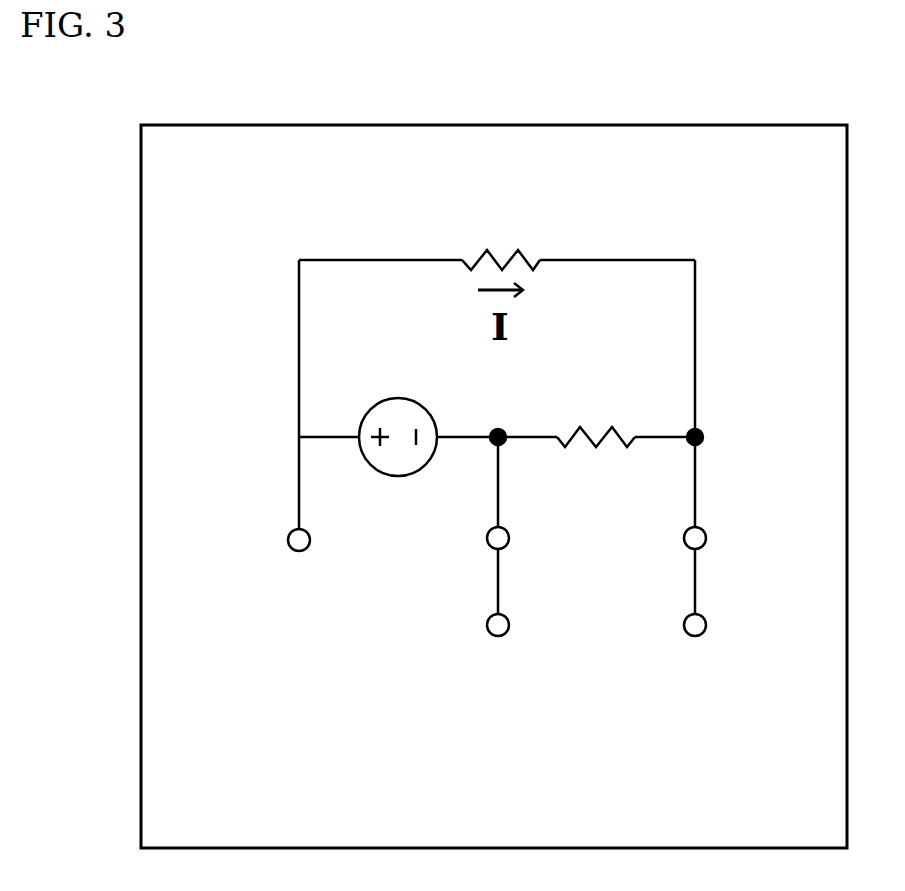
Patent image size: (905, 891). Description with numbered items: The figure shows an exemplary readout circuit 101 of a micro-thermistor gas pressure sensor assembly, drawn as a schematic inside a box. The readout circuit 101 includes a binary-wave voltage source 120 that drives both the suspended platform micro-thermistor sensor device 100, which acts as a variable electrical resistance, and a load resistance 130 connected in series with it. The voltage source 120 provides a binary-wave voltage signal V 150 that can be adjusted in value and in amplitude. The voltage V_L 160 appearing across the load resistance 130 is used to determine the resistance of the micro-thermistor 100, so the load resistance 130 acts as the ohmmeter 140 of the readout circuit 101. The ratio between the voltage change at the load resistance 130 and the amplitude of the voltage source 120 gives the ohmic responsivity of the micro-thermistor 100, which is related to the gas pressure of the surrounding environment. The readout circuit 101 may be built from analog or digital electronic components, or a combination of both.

The readout electrical circuit 101 is at (138, 275).
The suspended platform micro-thermistor sensor device 100 is at (528, 252).
The binary-wave voltage source 120 is at (385, 412).
The load resistance 130 is at (620, 430).
The binary-wave voltage signal V 150 is at (398, 543).
The voltage V_L at the load resistance 160 is at (620, 545).
The ohmmeter 140 is at (617, 685).